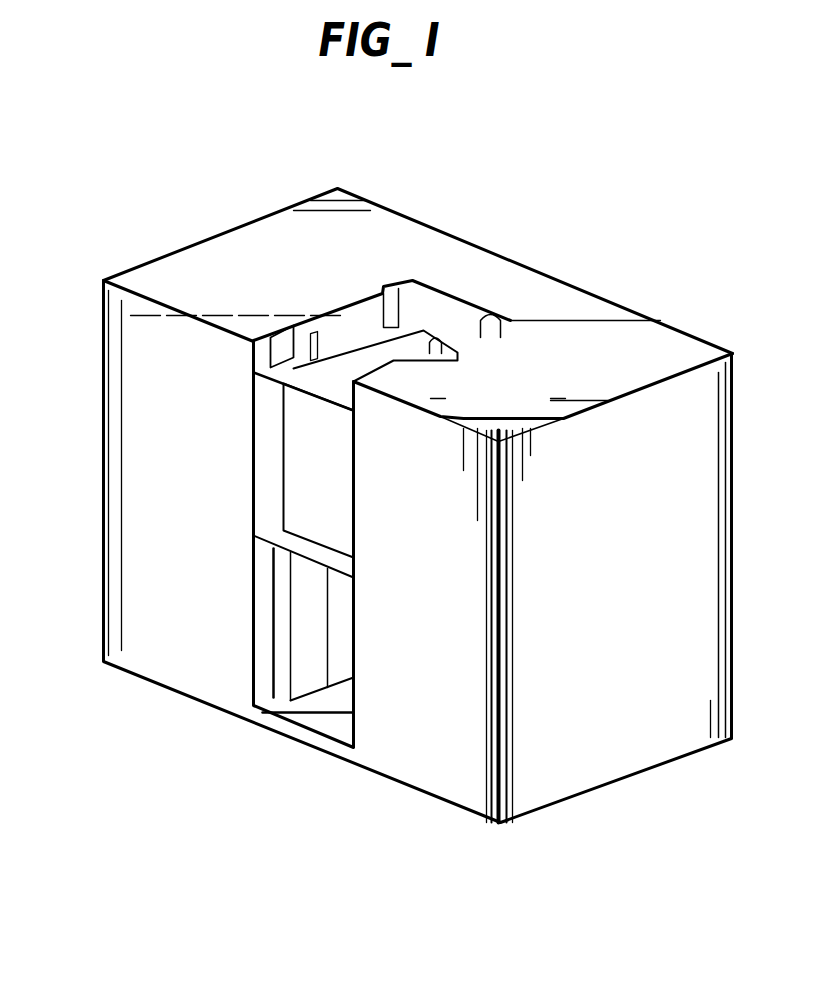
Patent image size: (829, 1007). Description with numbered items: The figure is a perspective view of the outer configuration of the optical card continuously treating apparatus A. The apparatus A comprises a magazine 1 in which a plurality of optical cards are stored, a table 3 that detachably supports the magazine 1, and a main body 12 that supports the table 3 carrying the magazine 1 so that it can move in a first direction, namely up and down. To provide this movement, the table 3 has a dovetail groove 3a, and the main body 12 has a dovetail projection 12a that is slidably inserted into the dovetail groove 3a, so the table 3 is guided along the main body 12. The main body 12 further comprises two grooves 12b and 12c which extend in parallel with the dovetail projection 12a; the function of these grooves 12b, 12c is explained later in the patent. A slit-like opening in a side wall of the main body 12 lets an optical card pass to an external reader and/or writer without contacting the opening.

The main body 12 is at (549, 765).
The dovetail projection 12a is at (370, 320).
The groove 12b is at (432, 350).
The groove 12c is at (497, 330).
The magazine 1 is at (300, 465).
The table 3 is at (265, 508).
The dovetail groove 3a is at (278, 353).
The optical card continuously treating apparatus A is at (615, 270).